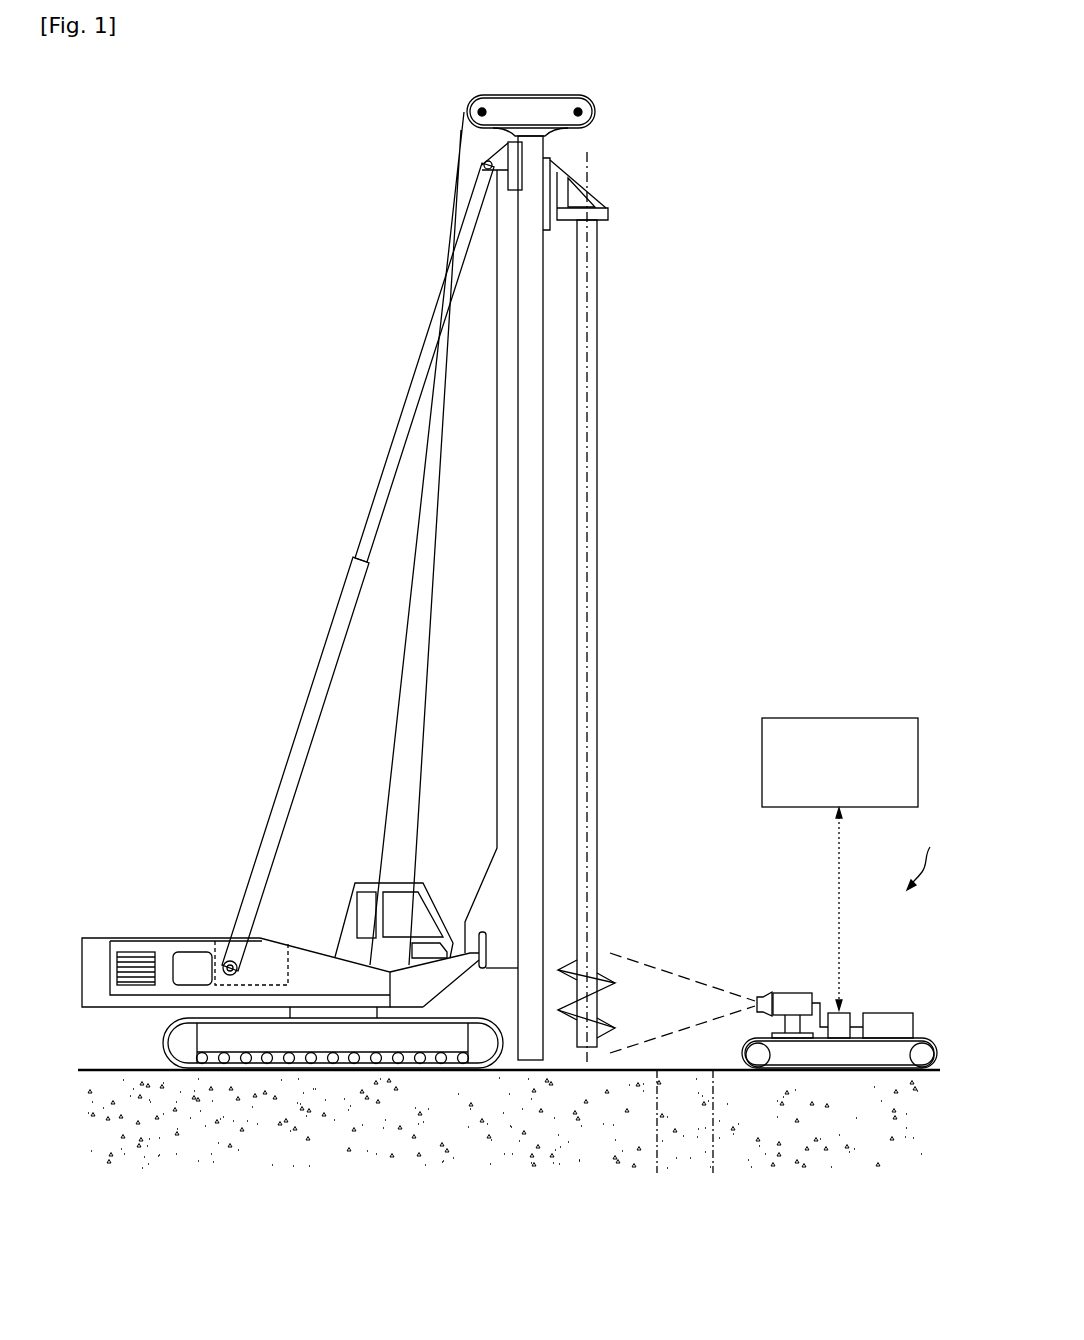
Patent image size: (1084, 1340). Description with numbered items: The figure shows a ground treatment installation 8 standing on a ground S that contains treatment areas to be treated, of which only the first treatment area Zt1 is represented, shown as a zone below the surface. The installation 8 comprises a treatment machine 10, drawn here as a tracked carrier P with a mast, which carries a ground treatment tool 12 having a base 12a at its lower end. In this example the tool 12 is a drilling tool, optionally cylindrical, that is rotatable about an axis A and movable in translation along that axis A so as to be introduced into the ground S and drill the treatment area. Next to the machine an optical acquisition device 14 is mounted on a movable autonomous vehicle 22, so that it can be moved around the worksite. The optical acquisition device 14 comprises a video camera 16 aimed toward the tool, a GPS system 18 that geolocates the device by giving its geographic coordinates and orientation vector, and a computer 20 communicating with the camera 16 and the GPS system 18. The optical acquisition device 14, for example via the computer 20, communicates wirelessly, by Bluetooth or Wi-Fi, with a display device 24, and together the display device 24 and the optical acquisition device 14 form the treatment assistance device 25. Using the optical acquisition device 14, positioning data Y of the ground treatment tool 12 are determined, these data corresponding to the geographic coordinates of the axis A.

The ground treatment installation 8 is at (257, 633).
The treatment machine 10 is at (362, 443).
The ground treatment tool 12 is at (595, 448).
The base 12a is at (592, 1007).
The axis A is at (588, 173).
The optical acquisition device 14 is at (851, 995).
The video camera 16 is at (794, 1003).
The GPS system 18 is at (888, 1024).
The computer 20 is at (845, 1021).
The movable autonomous vehicle 22 is at (920, 1056).
The display device 24 is at (823, 775).
The treatment assistance device 25 is at (933, 853).
The base machine / carrier P is at (128, 1070).
The ground S is at (897, 1128).
The positioning data of the ground treatment tool Y is at (848, 909).
The first treatment area Zt1 is at (675, 1150).